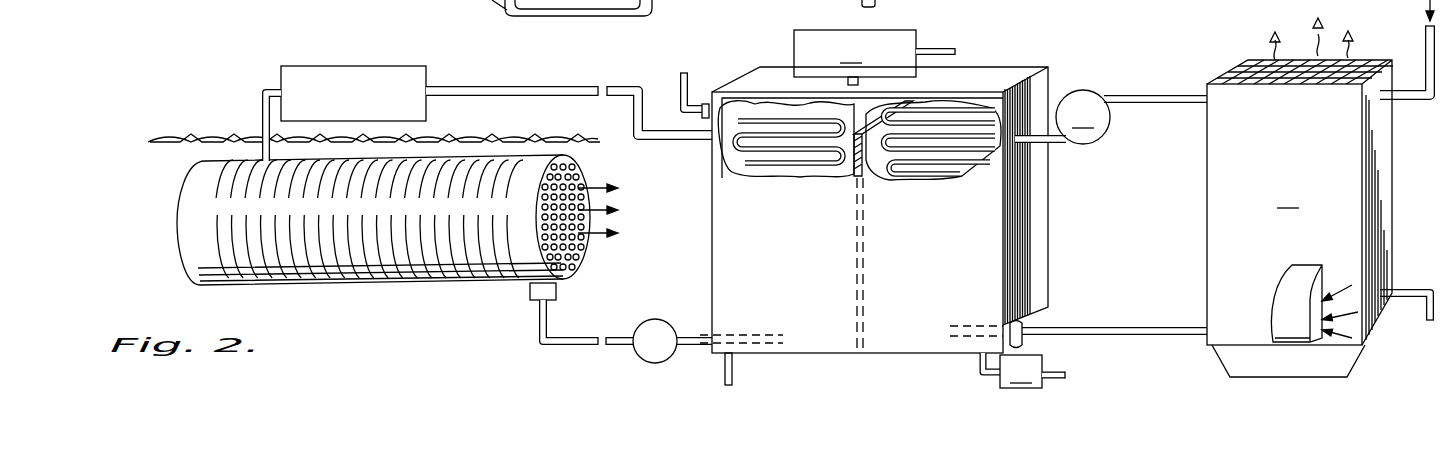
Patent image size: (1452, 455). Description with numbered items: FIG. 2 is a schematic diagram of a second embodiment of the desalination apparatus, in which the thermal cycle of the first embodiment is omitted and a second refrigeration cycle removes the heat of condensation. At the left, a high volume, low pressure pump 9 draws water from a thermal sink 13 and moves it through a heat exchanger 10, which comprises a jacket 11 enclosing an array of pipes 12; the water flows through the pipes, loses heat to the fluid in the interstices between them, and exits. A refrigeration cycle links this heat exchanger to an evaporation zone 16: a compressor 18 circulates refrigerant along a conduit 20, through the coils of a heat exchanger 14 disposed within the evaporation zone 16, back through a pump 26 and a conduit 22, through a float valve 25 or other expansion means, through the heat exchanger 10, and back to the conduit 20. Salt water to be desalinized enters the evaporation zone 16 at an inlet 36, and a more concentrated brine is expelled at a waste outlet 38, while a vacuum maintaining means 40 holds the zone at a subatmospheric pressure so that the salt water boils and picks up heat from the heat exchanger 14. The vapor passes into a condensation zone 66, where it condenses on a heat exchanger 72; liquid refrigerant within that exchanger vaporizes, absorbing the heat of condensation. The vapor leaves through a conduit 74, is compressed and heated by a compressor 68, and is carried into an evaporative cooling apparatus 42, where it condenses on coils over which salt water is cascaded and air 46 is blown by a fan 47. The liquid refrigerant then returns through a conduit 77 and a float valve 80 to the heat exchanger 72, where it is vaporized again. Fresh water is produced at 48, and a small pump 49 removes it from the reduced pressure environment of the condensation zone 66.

The pump 9 is at (181, 270).
The heat exchanger 10 is at (257, 296).
The jacket 11 is at (284, 268).
The pipes 12 is at (576, 172).
The thermal sink 13 is at (175, 160).
The heat exchanger 14 is at (797, 140).
The evaporation zone 16 is at (736, 172).
The compressor 18 is at (425, 72).
The conduit 20 is at (261, 98).
The conduit 22 is at (565, 338).
The float valve 25 is at (530, 288).
The pump 26 is at (641, 326).
The inlet 36 is at (678, 80).
The waste outlet 38 is at (725, 370).
The vacuum maintaining means 40 is at (874, 57).
The evaporative cooling apparatus 42 is at (1321, 188).
The air 46 is at (1317, 43).
The fan 47 is at (1288, 297).
The fresh water outlet 48 is at (1062, 364).
The pump 49 is at (1012, 370).
The condensation zone 66 is at (971, 182).
The compressor 68 is at (1131, 117).
The heat exchanger 72 is at (893, 152).
The conduit 74 is at (1050, 147).
The conduit 77 is at (1124, 326).
The float valve 80 is at (1030, 322).